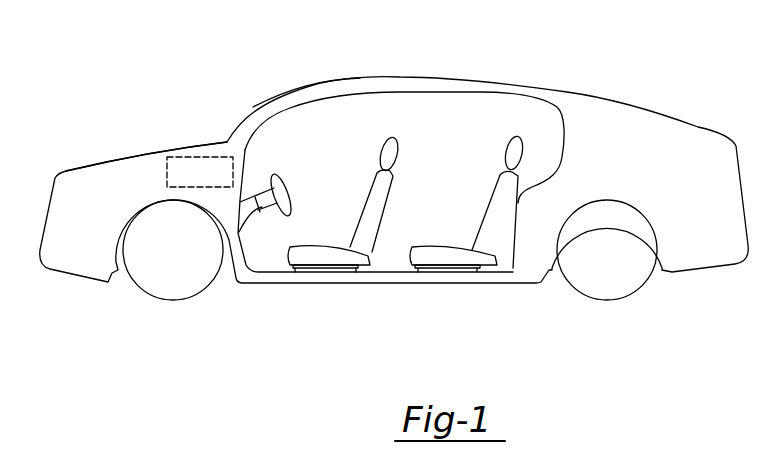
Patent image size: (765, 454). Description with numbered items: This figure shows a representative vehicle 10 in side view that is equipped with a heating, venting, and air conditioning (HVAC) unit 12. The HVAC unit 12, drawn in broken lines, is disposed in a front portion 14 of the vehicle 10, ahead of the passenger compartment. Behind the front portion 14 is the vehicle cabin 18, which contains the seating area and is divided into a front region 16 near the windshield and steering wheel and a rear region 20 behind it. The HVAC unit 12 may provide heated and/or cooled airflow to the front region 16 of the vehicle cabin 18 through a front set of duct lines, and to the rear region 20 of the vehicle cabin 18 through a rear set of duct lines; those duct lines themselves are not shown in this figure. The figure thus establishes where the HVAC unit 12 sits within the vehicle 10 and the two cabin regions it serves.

The vehicle 10 is at (385, 166).
The heating, venting, and air conditioning (HVAC) unit 12 is at (188, 156).
The front portion 14 is at (98, 162).
The front region 16 is at (302, 130).
The vehicle cabin 18 is at (413, 124).
The rear region 20 is at (472, 113).